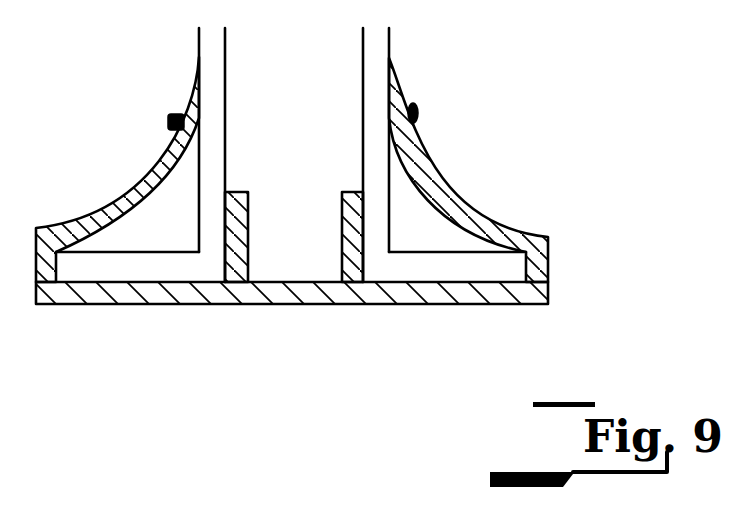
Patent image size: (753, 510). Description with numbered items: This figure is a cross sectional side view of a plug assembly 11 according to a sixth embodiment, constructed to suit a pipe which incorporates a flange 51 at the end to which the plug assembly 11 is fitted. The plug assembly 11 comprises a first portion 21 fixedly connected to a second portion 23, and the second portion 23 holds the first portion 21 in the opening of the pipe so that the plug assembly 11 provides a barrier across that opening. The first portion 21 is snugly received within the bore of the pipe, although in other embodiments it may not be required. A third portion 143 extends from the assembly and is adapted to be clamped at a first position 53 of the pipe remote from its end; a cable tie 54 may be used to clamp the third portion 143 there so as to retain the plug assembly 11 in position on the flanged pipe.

The plug assembly 11 is at (439, 173).
The first portion 21 is at (350, 234).
The second portion 23 is at (181, 288).
The flange 51 is at (103, 264).
The first position 53 is at (377, 90).
The cable tie 54 is at (415, 104).
The third portion 143 is at (117, 210).